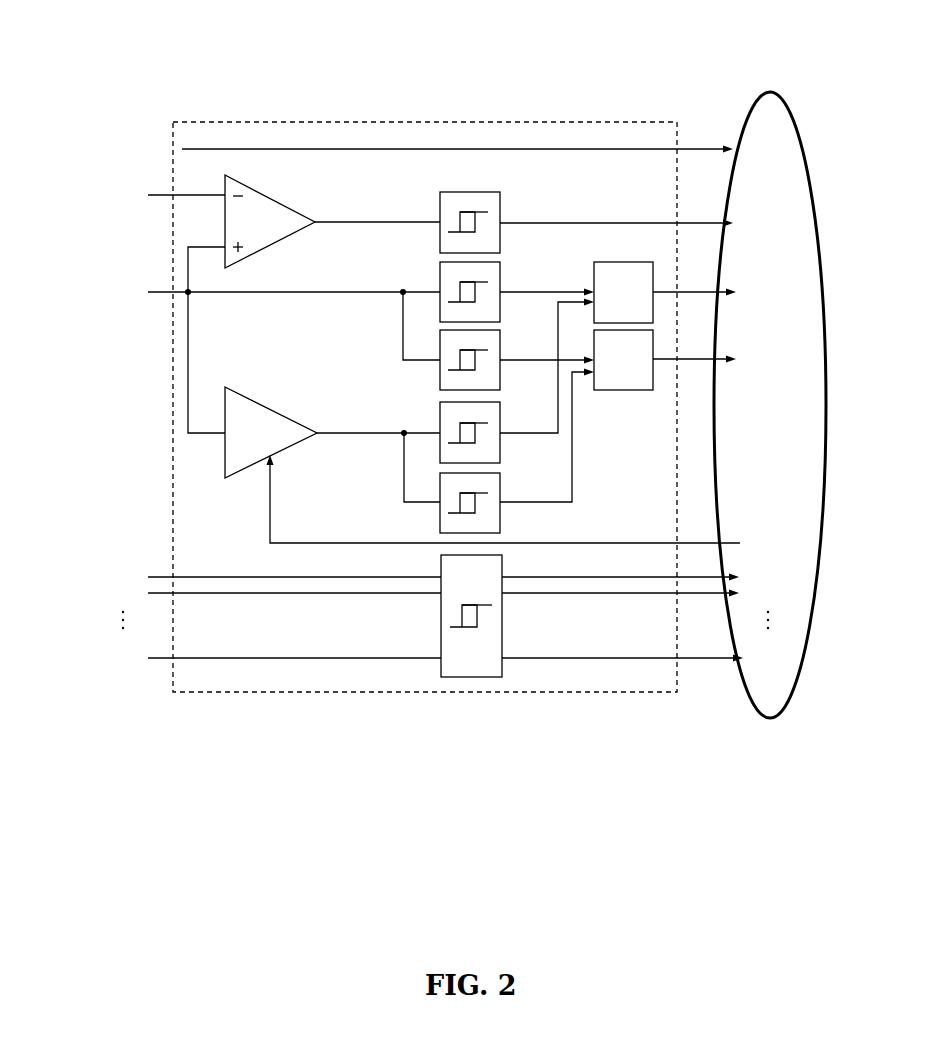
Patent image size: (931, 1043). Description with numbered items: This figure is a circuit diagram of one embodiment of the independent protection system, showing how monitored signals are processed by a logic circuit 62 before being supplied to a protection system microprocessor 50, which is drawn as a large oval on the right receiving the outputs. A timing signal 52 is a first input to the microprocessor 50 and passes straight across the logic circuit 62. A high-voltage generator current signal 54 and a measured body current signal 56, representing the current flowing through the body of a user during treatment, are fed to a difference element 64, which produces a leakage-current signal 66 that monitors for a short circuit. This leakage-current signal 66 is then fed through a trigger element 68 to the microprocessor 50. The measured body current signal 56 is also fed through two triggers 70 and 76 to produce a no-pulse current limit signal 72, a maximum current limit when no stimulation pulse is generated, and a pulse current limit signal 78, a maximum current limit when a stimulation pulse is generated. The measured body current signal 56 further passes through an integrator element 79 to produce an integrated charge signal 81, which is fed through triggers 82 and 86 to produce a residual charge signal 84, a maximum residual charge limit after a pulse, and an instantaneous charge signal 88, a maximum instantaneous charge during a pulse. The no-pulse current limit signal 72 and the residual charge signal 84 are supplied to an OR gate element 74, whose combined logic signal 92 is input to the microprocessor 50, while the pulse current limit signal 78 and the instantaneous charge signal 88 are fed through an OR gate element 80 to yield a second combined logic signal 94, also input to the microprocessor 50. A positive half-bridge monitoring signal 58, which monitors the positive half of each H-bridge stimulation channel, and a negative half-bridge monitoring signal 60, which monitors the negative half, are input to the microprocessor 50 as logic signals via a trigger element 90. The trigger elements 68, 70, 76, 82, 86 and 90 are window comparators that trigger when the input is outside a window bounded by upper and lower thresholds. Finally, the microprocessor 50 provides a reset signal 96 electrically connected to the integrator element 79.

The protection system microprocessor 50 is at (755, 95).
The timing signal EN 52 is at (395, 145).
The signal IHT 54 is at (141, 191).
The signal IMES 56 is at (248, 340).
The signal IPH1P 58 is at (405, 579).
The signal IPH1N 60 is at (409, 638).
The logic circuit 62 is at (400, 122).
The difference element 64 is at (270, 221).
The dI signal 66 is at (524, 213).
The trigger element 68 is at (465, 192).
The trigger 70 is at (440, 278).
The signal Io 72 is at (547, 280).
The OR gate element 74 is at (608, 262).
The trigger 76 is at (440, 380).
The signal I 78 is at (547, 361).
The integrator element 79 is at (271, 432).
The OR gate element 80 is at (608, 390).
The signal Qi 81 is at (378, 456).
The trigger 82 is at (440, 425).
The signal Qo 84 is at (547, 379).
The trigger 86 is at (440, 513).
The signal Q 88 is at (547, 446).
The trigger element 90 is at (471, 616).
The logic signal Qo/Io 92 is at (694, 301).
The logic signal Q/I 94 is at (694, 367).
The reset signal 96 is at (504, 499).